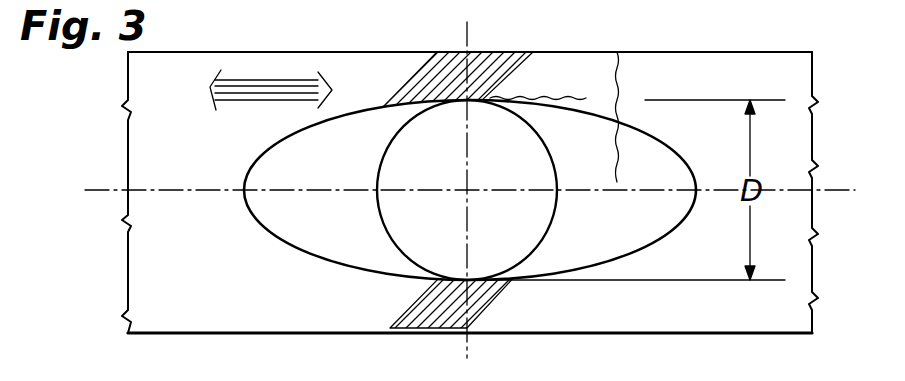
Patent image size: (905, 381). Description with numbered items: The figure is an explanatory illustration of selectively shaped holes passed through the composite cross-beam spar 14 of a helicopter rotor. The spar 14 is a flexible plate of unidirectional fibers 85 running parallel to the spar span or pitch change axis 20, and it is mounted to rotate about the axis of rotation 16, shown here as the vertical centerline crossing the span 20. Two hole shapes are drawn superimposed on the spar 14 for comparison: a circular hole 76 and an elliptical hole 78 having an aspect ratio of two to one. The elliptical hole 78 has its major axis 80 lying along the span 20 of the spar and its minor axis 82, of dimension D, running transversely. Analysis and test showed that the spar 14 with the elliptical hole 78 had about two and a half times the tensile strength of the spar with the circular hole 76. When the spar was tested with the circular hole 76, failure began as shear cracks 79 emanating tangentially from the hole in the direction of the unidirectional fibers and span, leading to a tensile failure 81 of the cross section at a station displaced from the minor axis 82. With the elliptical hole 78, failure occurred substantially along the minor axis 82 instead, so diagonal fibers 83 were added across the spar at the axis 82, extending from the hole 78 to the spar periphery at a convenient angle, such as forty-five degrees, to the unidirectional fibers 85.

The cross-beam spar 14 is at (702, 62).
The axis of rotation 16 is at (467, 188).
The spar span or pitch change axis 20 is at (208, 150).
The circular hole 76 is at (545, 155).
The elliptical hole 78 is at (650, 145).
The shear cracks 79 is at (547, 98).
The major axis 80 is at (623, 192).
The tensile failure 81 is at (617, 83).
The minor axis 82 is at (467, 225).
The diagonal fibers 83 is at (411, 78).
The unidirectional fibers 85 is at (263, 80).